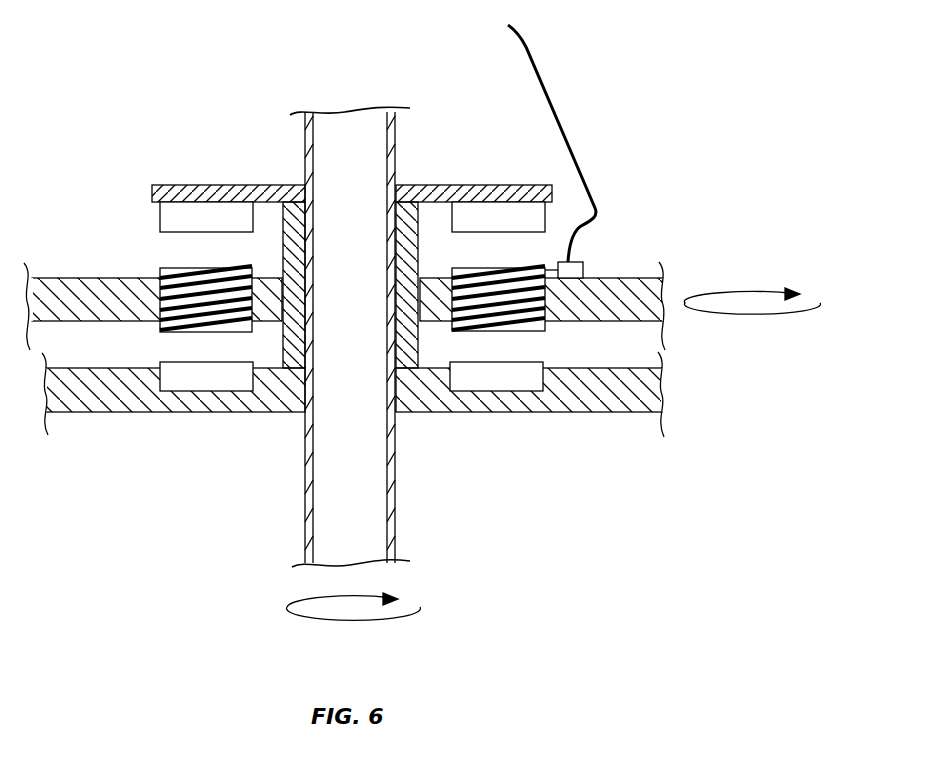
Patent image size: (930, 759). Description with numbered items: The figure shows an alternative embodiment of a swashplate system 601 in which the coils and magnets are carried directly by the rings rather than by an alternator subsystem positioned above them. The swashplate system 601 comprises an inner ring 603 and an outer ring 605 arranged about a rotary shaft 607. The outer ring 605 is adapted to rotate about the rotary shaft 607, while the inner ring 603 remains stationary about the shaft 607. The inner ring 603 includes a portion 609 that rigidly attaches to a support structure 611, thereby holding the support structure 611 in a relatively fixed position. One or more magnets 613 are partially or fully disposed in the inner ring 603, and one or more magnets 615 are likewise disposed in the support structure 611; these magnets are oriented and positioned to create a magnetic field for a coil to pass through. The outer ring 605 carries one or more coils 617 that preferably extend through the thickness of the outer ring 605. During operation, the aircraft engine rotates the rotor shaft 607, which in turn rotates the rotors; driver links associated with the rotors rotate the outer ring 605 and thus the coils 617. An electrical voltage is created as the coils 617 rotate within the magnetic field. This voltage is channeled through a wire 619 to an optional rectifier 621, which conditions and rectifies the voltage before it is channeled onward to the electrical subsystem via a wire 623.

The swashplate system 601 is at (113, 106).
The inner ring 603 is at (117, 412).
The outer ring 605 is at (632, 321).
The rotary shaft 607 is at (305, 465).
The portion 609 is at (283, 274).
The support structure 611 is at (284, 186).
The magnets 613 is at (512, 412).
The magnets 615 is at (160, 217).
The coils 617 is at (159, 272).
The wire 619 is at (168, 333).
The rectifier 621 is at (583, 268).
The wire 623 is at (547, 92).